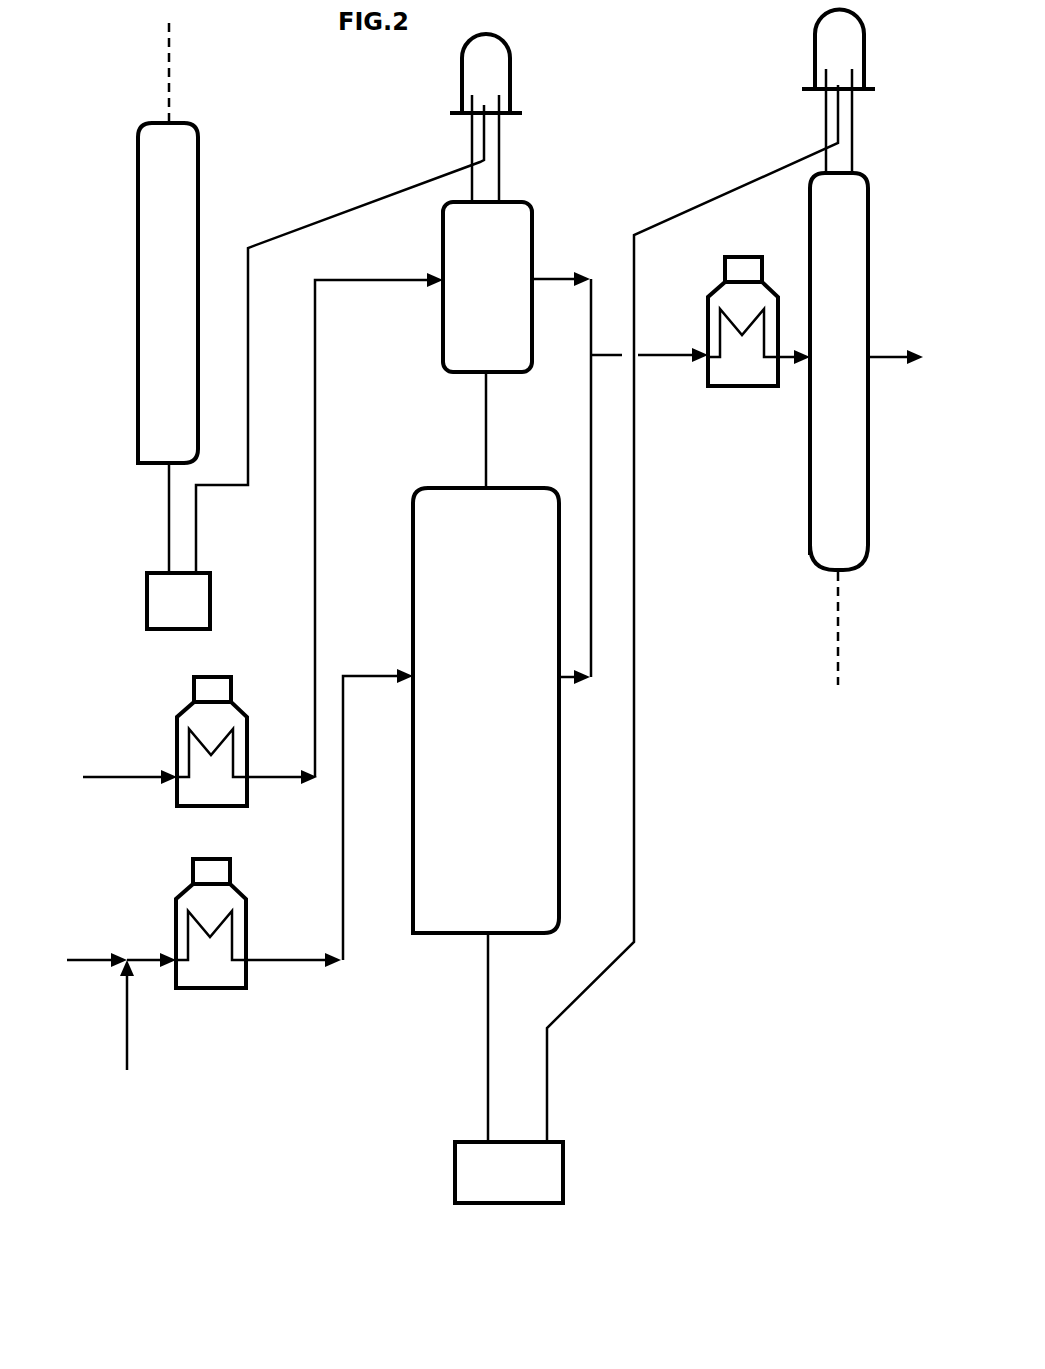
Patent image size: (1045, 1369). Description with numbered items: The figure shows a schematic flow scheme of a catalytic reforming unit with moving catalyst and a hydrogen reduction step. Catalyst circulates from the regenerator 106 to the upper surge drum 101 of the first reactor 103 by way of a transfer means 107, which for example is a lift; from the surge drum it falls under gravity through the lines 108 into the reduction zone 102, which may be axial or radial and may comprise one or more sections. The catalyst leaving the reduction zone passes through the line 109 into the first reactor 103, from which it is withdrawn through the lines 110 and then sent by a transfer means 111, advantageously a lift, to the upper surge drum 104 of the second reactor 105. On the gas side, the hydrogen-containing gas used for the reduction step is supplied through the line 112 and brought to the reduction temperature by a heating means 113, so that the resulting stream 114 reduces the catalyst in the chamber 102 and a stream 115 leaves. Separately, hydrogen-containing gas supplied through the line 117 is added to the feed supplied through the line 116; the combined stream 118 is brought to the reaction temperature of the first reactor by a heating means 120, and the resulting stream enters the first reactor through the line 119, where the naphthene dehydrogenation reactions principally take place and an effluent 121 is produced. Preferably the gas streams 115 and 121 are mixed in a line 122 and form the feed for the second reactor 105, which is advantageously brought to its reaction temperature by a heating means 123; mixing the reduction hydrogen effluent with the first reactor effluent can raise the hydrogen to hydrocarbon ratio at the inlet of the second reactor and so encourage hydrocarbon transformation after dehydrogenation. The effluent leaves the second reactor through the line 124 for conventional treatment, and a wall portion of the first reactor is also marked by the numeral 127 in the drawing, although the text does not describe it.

The upper surge drum 101 is at (510, 69).
The reduction zone 102 is at (510, 298).
The first reactor 103 is at (511, 712).
The upper surge drum 104 is at (815, 55).
The second reactor 105 is at (860, 368).
The regenerator 106 is at (192, 296).
The transfer means 107 is at (332, 216).
The lines 108 is at (499, 170).
The line 109 is at (486, 463).
The lines 110 is at (488, 1093).
The transfer means 111 is at (634, 650).
The line 112 is at (150, 777).
The heating means 113 is at (177, 718).
The stream 114 is at (315, 473).
The stream 115 is at (553, 278).
The line 116 is at (110, 958).
The line 117 is at (127, 1005).
The stream 118 is at (155, 958).
The line 119 is at (372, 676).
The heating means 120 is at (200, 992).
The effluent 121 is at (590, 405).
The line 122 is at (660, 359).
The heating means 123 is at (735, 388).
The line 124 is at (878, 357).
The second reactor wall 127 is at (559, 823).